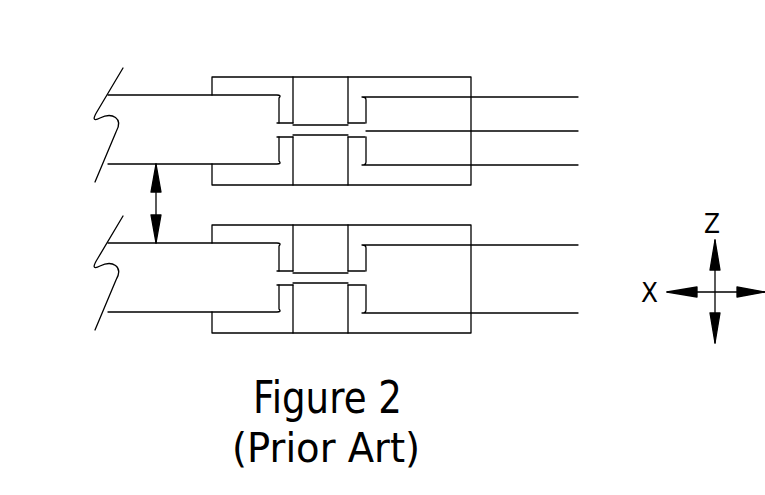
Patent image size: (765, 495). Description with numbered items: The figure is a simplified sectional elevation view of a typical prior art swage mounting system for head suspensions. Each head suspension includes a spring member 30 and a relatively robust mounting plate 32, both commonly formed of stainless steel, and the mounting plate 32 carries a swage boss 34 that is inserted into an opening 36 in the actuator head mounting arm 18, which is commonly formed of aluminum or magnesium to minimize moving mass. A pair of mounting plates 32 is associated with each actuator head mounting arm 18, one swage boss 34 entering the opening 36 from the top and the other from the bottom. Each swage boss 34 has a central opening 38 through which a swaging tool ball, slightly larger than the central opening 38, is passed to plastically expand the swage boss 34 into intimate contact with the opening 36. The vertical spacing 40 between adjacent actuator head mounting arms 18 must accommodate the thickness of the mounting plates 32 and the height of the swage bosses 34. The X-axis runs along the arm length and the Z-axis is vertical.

The actuator head mounting arm 18 is at (161, 108).
The spring member 30 is at (538, 97).
The mounting plate 32 is at (415, 88).
The swage boss 34 is at (287, 110).
The opening 36 is at (578, 131).
The central opening 38 is at (318, 87).
The vertical spacing 40 is at (156, 199).